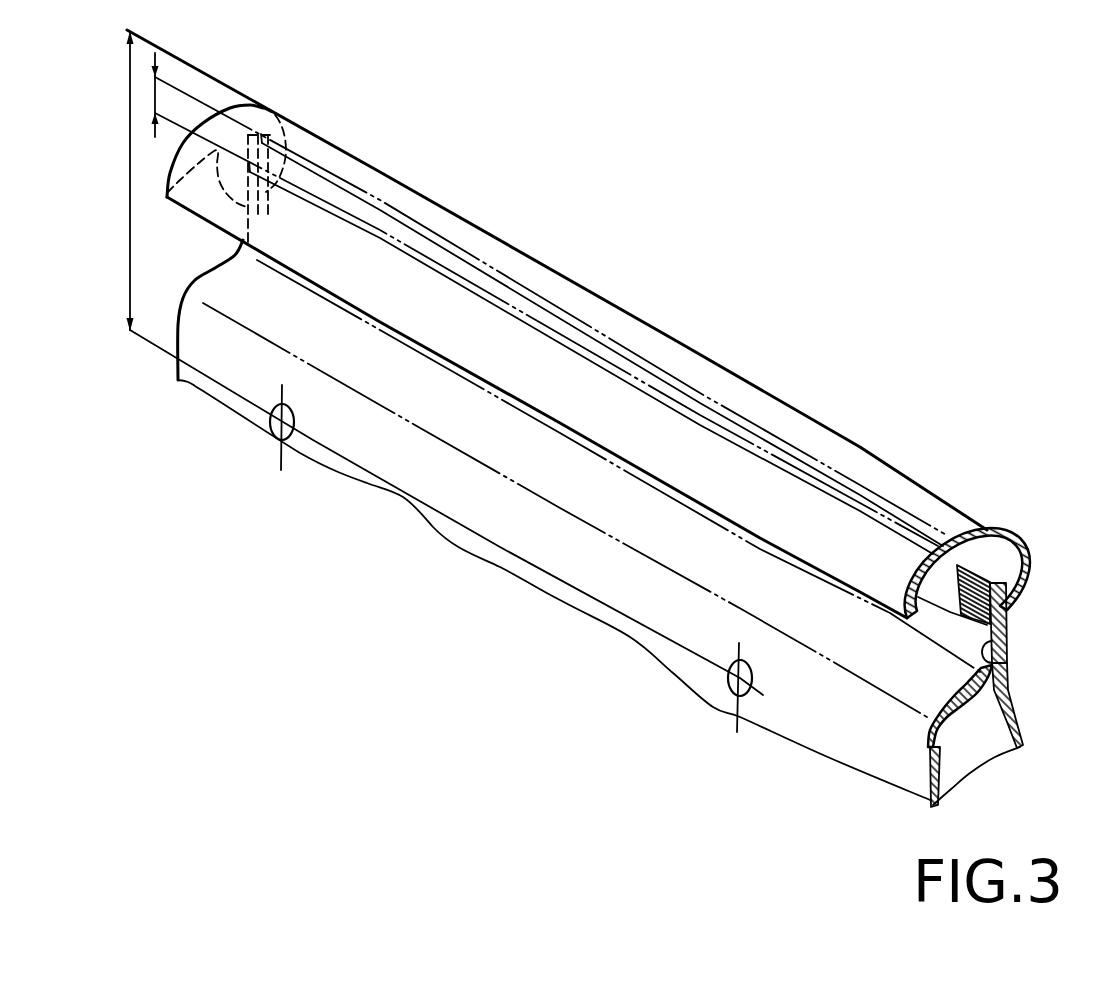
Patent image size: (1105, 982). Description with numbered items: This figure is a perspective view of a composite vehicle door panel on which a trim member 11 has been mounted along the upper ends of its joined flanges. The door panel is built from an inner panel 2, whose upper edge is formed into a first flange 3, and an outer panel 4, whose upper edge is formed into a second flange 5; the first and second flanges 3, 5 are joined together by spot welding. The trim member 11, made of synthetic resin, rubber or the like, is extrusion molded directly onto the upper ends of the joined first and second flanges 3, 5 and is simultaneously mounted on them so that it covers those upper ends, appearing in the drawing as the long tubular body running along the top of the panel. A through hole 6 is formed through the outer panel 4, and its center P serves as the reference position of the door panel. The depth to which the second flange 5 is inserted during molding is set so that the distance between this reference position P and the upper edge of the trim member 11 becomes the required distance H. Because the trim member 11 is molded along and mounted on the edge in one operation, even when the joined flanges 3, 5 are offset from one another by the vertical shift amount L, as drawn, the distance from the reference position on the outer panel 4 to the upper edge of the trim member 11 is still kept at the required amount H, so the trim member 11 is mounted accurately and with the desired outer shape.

The trim member 11 is at (954, 499).
The first flange 3 is at (1009, 622).
The second flange 5 is at (1010, 663).
The inner panel 2 is at (1020, 720).
The outer panel 4 is at (928, 750).
The through hole 6 is at (272, 428).
The center of the through hole P is at (291, 437).
The required distance H is at (127, 168).
The amount of vertical shift L is at (141, 93).